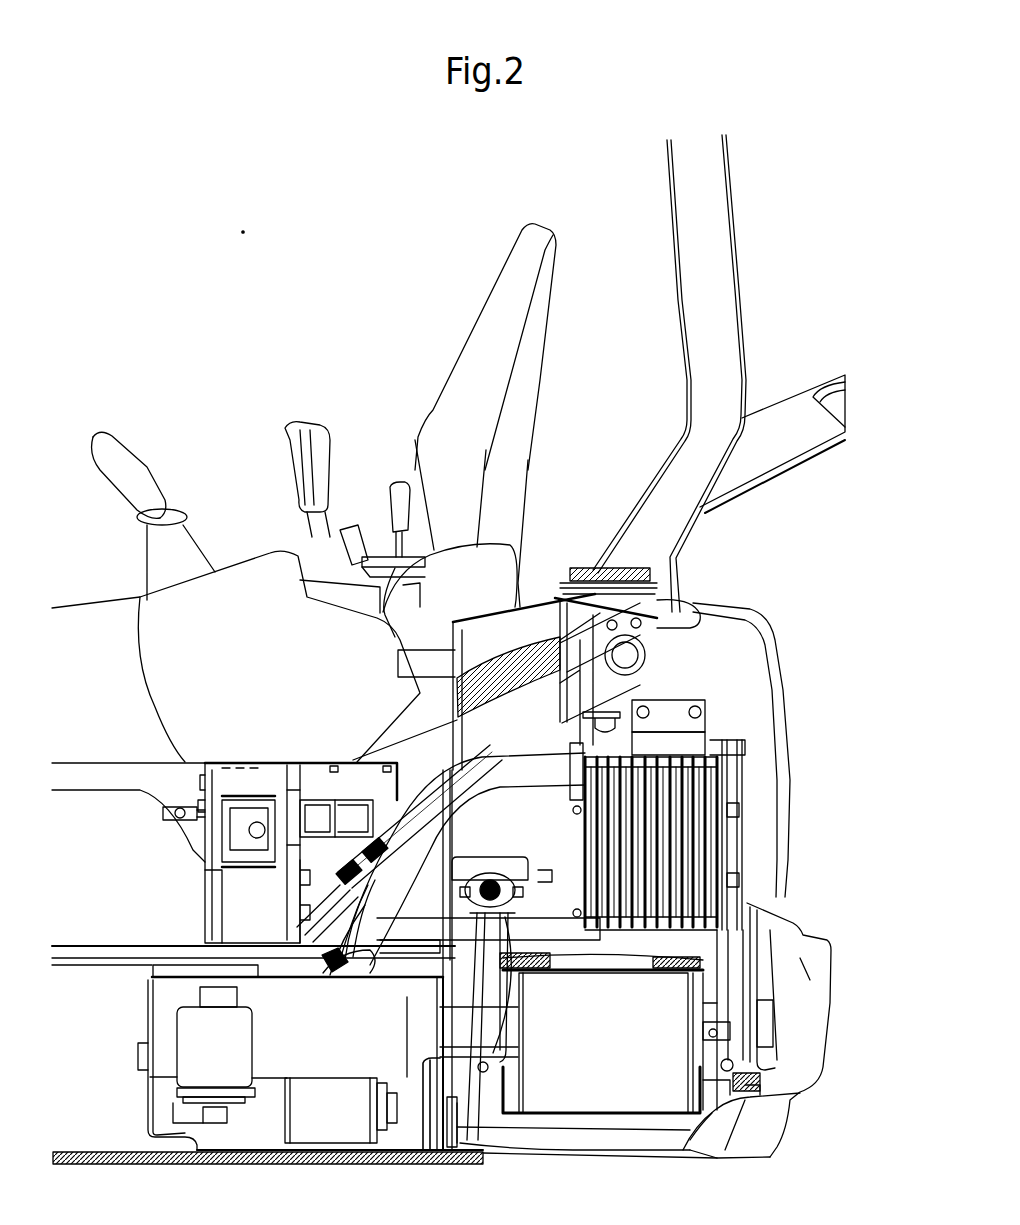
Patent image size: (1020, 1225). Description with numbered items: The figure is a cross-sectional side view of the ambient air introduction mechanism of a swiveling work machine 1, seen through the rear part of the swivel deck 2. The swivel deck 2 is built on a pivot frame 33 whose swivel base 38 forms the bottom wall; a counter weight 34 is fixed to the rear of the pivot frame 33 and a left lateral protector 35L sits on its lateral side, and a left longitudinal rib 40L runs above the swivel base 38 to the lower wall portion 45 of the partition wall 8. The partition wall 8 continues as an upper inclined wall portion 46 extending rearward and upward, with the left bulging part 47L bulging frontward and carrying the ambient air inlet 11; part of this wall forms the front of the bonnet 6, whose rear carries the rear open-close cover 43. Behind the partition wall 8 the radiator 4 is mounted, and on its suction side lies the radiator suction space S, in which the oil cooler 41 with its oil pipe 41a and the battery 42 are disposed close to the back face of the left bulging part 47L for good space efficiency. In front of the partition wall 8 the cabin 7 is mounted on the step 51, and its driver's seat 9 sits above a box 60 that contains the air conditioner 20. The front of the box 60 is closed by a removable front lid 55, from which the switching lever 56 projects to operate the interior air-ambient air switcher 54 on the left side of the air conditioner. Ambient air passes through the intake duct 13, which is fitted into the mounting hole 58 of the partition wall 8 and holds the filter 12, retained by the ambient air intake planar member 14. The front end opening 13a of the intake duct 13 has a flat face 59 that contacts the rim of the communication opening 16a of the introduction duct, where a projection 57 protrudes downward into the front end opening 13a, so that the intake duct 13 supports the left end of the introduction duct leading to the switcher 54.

The swiveling work machine 1 is at (806, 269).
The swivel deck 2 is at (814, 598).
The radiator 4 is at (623, 743).
The bonnet 6 is at (757, 596).
The cabin 7 is at (755, 217).
The partition wall 8 is at (429, 893).
The driver's seat 9 is at (568, 300).
The ambient air inlet 11 is at (323, 983).
The filter 12 is at (446, 841).
The intake duct 13 is at (303, 903).
The front end opening 13a is at (327, 850).
The ambient air intake planar member 14 is at (357, 977).
The communication opening 16a is at (327, 830).
The air conditioner 20 is at (245, 770).
The pivot frame 33 is at (814, 1134).
The counter weight 34 is at (810, 1013).
The left lateral protector 35L is at (722, 1140).
The swivel base 38 is at (215, 1117).
The left longitudinal rib 40L is at (85, 973).
The oil cooler 41 is at (713, 734).
The oil pipe 41a is at (447, 813).
The battery 42 is at (587, 1100).
The rear open-close cover 43 is at (780, 413).
The lower wall portion 45 is at (430, 1067).
The upper inclined wall portion 46 is at (550, 683).
The left bulging part 47L is at (400, 827).
The step 51 is at (110, 957).
The interior air-ambient air switcher 54 is at (202, 870).
The front lid 55 is at (203, 908).
The switching lever 56 is at (175, 810).
The projection 57 is at (367, 830).
The mounting hole 58 is at (317, 950).
The flat face 59 is at (300, 830).
The box 60 is at (212, 750).
The radiator suction space S is at (540, 898).